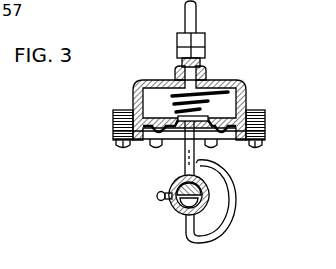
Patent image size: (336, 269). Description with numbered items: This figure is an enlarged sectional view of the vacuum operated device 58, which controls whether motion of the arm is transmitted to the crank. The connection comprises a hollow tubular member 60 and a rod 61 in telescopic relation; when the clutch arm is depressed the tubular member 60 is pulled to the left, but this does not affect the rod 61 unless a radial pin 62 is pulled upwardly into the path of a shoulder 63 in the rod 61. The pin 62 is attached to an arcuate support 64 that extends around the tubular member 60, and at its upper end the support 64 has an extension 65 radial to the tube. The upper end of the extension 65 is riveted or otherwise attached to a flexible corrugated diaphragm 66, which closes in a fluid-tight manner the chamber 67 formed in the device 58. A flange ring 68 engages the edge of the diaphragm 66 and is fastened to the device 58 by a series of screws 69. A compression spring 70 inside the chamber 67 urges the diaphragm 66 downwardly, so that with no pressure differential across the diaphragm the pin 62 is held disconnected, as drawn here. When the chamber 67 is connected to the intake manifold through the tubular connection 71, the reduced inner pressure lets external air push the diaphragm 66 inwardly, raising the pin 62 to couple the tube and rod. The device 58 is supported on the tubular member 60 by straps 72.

The vacuum operated device 58 is at (247, 91).
The hollow tubular member 60 is at (208, 197).
The rod 61 is at (206, 183).
The radial pin 62 is at (186, 224).
The shoulder 63 is at (170, 206).
The arcuate support 64 is at (230, 215).
The extension 65 is at (176, 153).
The flexible corrugated diaphragm 66 is at (248, 140).
The chamber 67 is at (237, 84).
The flange ring 68 is at (265, 134).
The screws 69 is at (115, 132).
The compression spring 70 is at (134, 94).
The tubular connection 71 is at (199, 10).
The straps 72 is at (180, 170).